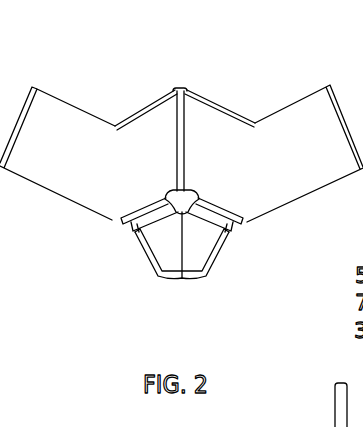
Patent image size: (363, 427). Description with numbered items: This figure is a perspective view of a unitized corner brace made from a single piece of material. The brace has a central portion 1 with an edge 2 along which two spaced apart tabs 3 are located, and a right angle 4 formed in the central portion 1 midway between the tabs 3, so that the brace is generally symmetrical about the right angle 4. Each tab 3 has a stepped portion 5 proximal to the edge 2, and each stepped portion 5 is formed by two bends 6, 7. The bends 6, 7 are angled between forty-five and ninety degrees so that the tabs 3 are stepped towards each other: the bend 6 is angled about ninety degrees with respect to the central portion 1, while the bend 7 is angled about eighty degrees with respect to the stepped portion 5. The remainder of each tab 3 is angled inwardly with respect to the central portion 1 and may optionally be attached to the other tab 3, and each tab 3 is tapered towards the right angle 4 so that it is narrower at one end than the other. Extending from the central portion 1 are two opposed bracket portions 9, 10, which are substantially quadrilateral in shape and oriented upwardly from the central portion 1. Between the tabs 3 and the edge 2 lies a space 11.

The central portion 1 is at (212, 128).
The edge 2 is at (240, 221).
The tabs 3 is at (155, 262).
The right angle 4 is at (186, 112).
The stepped portion 5 is at (131, 226).
The bend 6 is at (122, 221).
The bend 7 is at (137, 232).
The bracket portion 9 is at (52, 120).
The bracket portion 10 is at (293, 125).
The space 11 is at (186, 193).